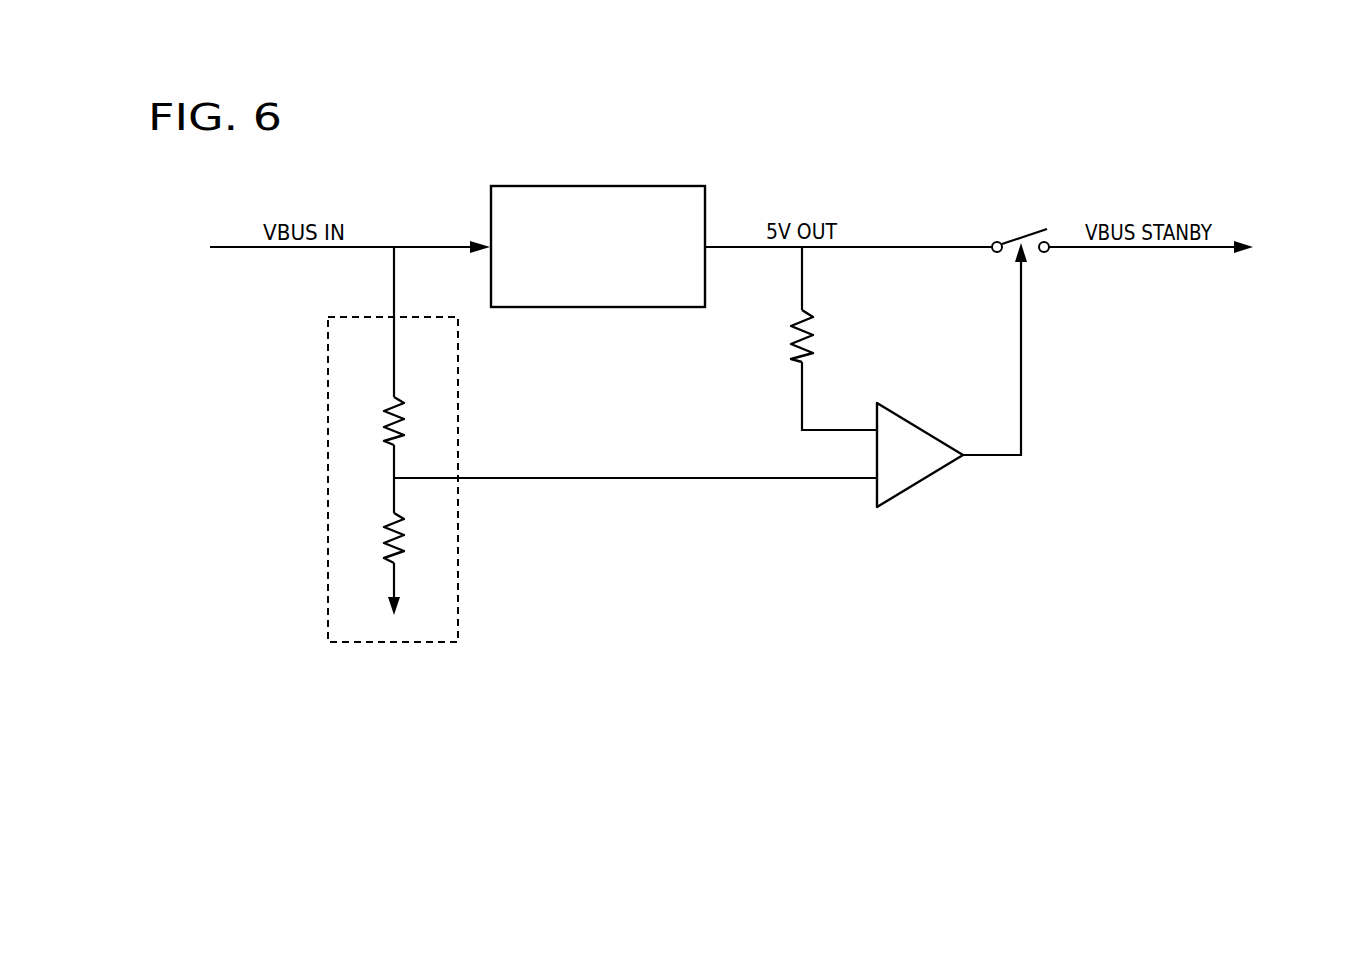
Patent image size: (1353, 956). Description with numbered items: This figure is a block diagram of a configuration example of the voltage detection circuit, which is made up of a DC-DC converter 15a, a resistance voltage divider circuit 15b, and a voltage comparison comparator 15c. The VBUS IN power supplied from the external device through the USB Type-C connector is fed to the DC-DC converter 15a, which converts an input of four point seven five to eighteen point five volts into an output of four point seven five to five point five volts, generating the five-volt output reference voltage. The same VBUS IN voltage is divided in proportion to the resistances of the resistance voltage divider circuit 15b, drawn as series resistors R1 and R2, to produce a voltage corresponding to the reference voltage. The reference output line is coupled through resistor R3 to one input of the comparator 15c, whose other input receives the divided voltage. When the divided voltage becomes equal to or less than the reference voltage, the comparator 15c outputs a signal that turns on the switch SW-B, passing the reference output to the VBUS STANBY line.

The DC-DC converter 15a is at (633, 186).
The resistance voltage divider circuit 15b is at (368, 460).
The voltage comparison comparator 15c is at (914, 423).
The resistor R1 is at (384, 408).
The resistor R2 is at (384, 526).
The resistor R3 is at (794, 324).
The switch SW-B is at (1020, 228).